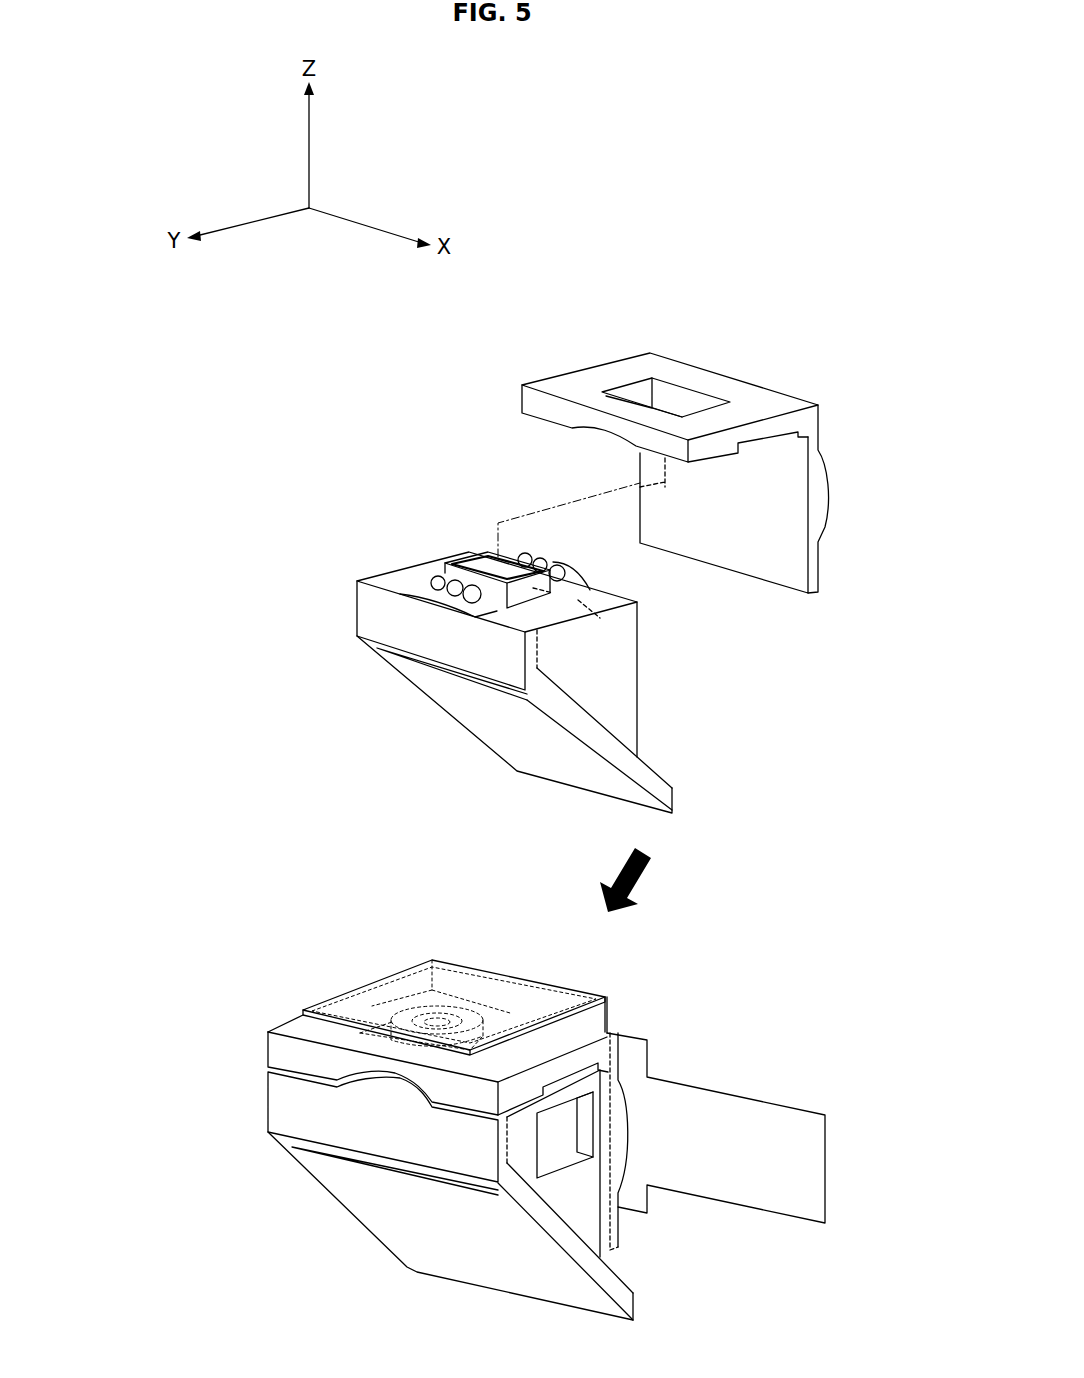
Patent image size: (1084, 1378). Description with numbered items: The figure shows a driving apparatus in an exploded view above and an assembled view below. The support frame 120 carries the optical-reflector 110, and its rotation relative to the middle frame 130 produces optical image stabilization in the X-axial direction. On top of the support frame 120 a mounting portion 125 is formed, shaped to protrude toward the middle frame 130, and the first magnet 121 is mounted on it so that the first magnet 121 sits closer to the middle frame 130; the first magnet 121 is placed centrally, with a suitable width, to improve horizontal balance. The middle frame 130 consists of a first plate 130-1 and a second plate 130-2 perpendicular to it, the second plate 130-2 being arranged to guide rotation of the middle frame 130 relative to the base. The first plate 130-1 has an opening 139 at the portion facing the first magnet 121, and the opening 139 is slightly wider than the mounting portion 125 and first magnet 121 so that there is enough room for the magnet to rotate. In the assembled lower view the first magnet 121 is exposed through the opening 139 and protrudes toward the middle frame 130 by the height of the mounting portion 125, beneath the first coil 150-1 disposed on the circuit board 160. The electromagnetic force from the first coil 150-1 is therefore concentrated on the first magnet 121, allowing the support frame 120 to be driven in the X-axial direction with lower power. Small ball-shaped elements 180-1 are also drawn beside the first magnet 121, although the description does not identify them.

The optical-reflector 110 is at (470, 705).
The support frame 120 is at (440, 881).
The first magnet 121 is at (480, 563).
The mounting portion 125 is at (577, 594).
The middle frame 130 is at (499, 753).
The first plate 130-1 is at (672, 380).
The second plate 130-2 is at (768, 558).
The opening 139 is at (636, 394).
The first coil 150-1 is at (407, 1013).
The circuit board 160 is at (473, 977).
The ball bearings 180-1 is at (436, 588).